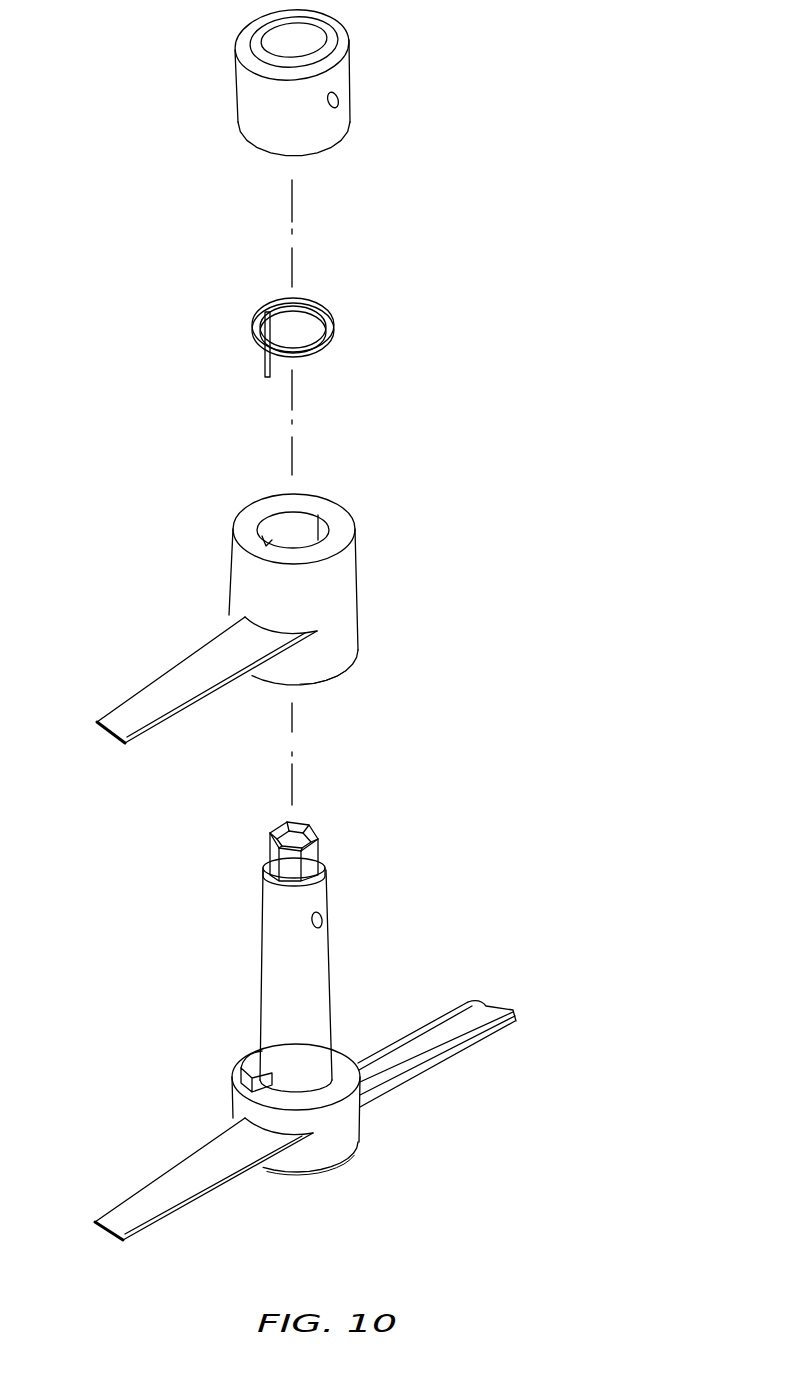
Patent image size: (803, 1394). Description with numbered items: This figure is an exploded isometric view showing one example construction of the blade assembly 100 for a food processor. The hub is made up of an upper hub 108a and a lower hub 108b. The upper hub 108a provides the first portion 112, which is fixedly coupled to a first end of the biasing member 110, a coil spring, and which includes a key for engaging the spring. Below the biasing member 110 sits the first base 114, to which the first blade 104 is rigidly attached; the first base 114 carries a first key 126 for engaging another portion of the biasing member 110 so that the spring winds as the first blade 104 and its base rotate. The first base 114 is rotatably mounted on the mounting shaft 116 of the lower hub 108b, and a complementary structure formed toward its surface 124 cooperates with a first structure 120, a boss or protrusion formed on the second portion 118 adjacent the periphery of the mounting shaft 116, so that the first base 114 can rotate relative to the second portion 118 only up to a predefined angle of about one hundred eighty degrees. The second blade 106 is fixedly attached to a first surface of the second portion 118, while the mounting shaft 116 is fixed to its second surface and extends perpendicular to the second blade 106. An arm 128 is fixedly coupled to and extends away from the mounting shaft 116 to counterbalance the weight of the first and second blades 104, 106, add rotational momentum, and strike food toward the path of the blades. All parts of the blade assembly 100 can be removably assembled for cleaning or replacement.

The blade assembly 100 is at (552, 64).
The upper hub 108a is at (190, 93).
The lower hub 108b is at (417, 903).
The first portion 112 is at (353, 82).
The biasing member 110 is at (335, 313).
The first base 114 is at (335, 588).
The first key 126 is at (263, 542).
The surface 124 is at (329, 688).
The first blade 104 is at (165, 690).
The mounting shaft 116 is at (332, 972).
The second portion 118 is at (340, 1138).
The first structure 120 is at (253, 1062).
The second blade 106 is at (135, 1205).
The arm 128 is at (473, 1003).